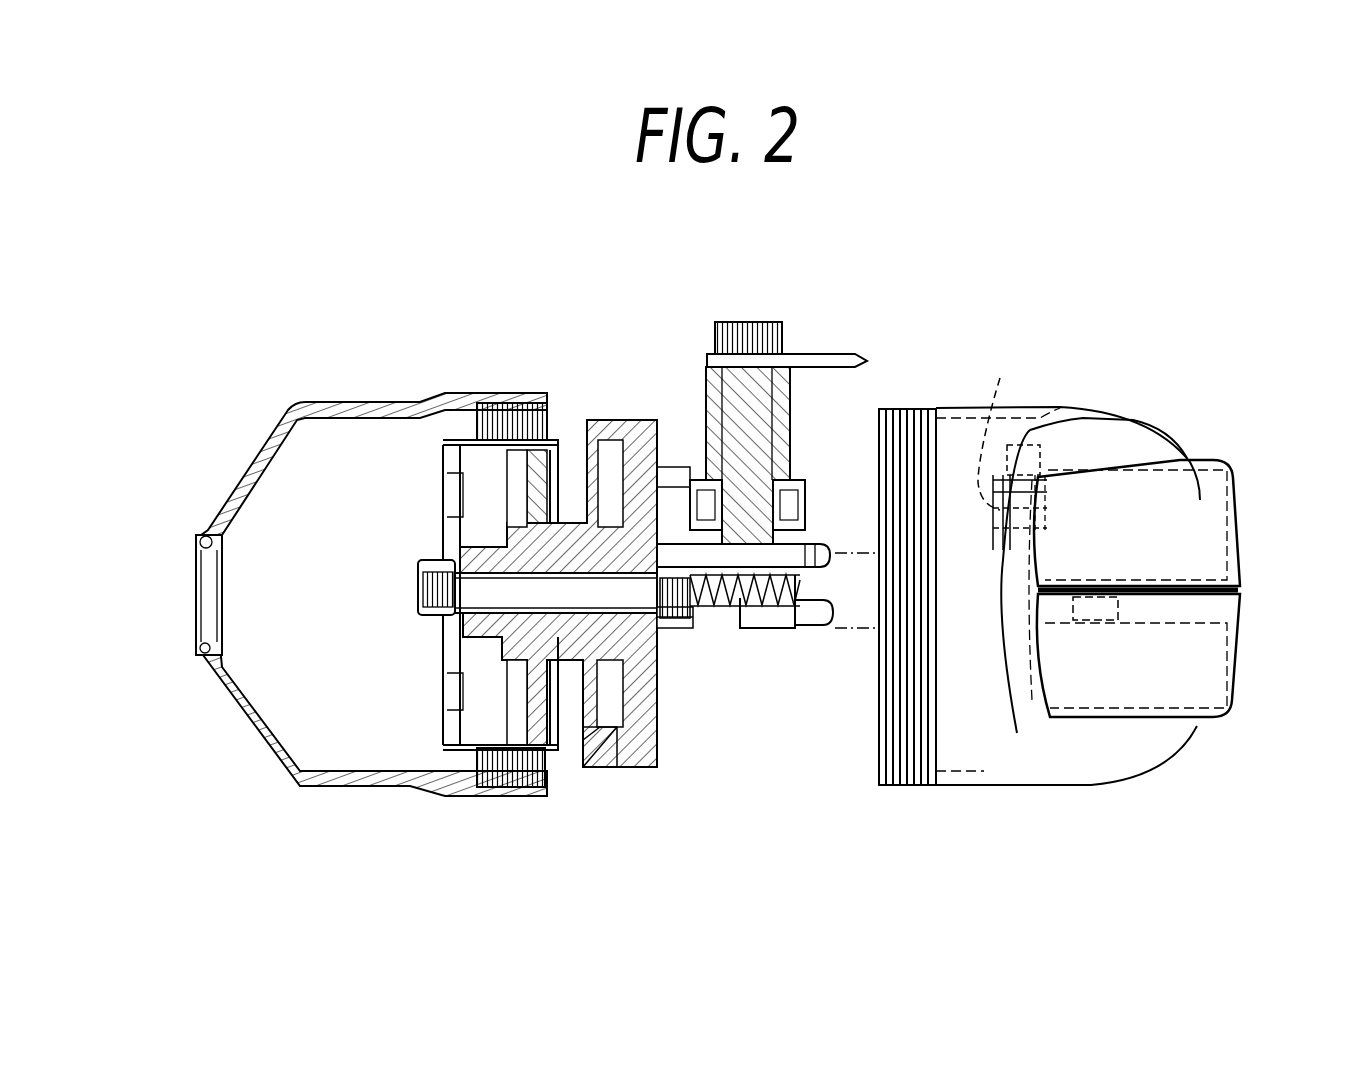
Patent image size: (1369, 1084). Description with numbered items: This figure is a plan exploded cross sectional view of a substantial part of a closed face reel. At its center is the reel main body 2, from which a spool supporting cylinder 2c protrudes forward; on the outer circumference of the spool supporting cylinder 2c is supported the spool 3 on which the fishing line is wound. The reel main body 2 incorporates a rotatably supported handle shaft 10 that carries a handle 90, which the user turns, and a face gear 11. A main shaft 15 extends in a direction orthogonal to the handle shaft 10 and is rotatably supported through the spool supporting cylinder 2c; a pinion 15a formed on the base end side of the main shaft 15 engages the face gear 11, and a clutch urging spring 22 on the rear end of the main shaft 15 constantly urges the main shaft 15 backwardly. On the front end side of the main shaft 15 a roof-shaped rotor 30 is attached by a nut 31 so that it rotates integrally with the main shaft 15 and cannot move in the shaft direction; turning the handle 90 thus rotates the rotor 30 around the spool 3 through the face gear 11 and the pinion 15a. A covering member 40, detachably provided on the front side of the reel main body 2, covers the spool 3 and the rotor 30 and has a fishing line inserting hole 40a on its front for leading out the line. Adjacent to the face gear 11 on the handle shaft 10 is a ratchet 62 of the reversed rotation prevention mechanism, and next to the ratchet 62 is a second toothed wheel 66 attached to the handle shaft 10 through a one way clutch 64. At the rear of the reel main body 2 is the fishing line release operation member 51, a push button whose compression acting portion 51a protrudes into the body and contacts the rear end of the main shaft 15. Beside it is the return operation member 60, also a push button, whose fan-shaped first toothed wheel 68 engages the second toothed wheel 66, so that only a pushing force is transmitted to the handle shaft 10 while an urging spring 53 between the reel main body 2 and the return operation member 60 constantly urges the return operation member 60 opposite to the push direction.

The reel main body 2 is at (643, 697).
The spool supporting cylinder 2c is at (612, 735).
The spool 3 is at (573, 657).
The handle shaft 10 is at (748, 345).
The face gear 11 is at (822, 542).
The main shaft 15 is at (520, 400).
The pinion 15a is at (673, 629).
The clutch urging spring 22 is at (722, 603).
The rotor 30 is at (437, 722).
The nut 31 is at (422, 616).
The covering member 40 is at (348, 395).
The fishing line inserting hole 40a is at (196, 570).
The fishing line release operation member 51 is at (1198, 663).
The compression acting portion 51a is at (1097, 620).
The urging spring 53 is at (1055, 477).
The return operation member 60 is at (1190, 530).
The ratchet 62 is at (797, 622).
The one way clutch 64 is at (715, 470).
The second toothed wheel 66 is at (660, 490).
The first toothed wheel 68 is at (1012, 441).
The handle 90 is at (825, 354).